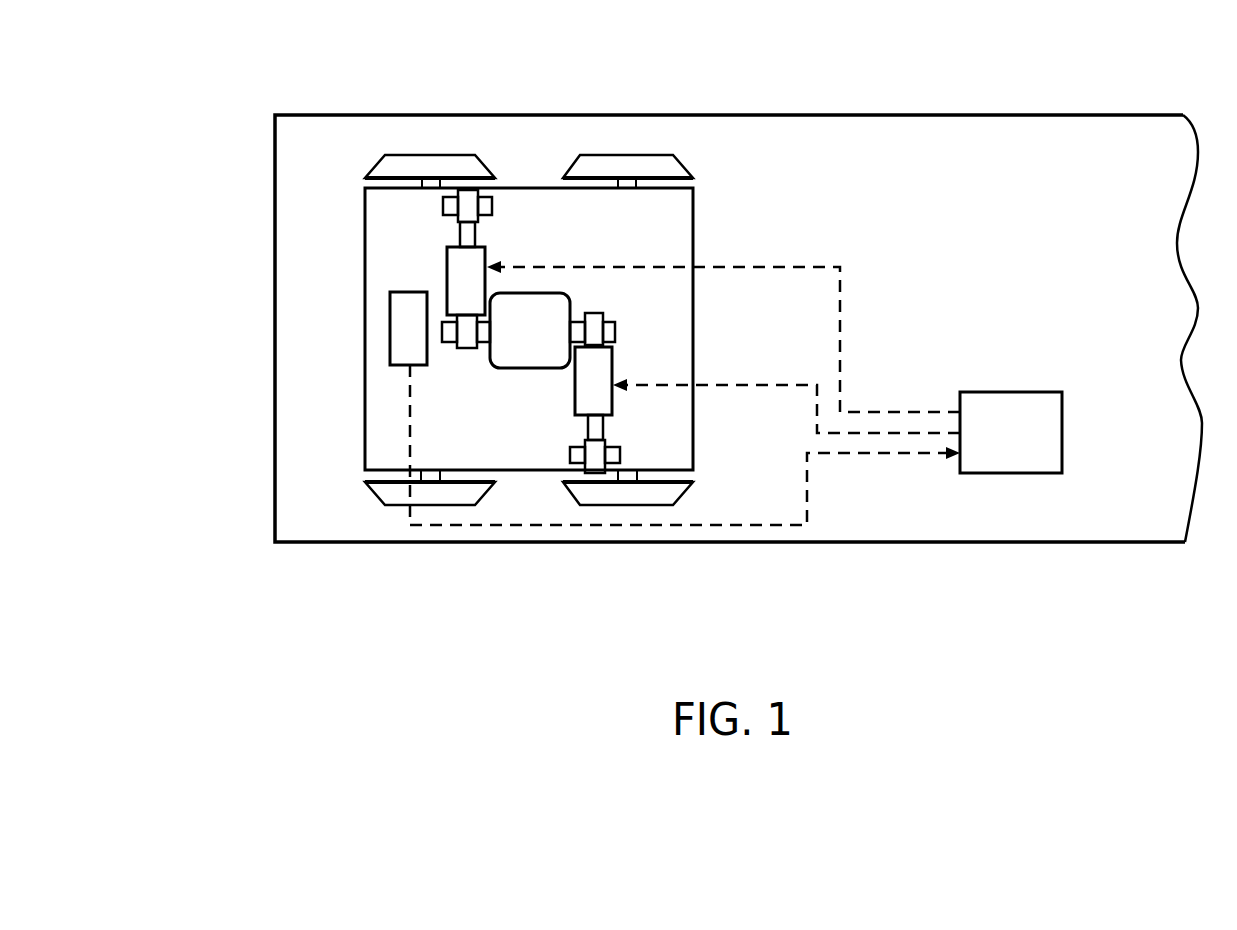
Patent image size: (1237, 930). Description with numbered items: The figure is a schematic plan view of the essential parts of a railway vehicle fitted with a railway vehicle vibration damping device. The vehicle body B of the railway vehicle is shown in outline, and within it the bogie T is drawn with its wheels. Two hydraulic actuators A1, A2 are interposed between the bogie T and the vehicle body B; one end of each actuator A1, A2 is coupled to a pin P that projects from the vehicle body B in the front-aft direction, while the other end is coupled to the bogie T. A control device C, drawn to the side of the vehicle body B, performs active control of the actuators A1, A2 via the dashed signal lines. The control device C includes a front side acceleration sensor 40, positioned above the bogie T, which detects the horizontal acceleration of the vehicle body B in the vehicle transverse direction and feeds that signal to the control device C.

The vehicle body B is at (336, 110).
The bogie T is at (375, 417).
The front side acceleration sensor 40 is at (402, 323).
The hydraulic actuator A1 is at (477, 260).
The hydraulic actuator A2 is at (603, 367).
The pin P is at (452, 338).
The control device C is at (957, 482).